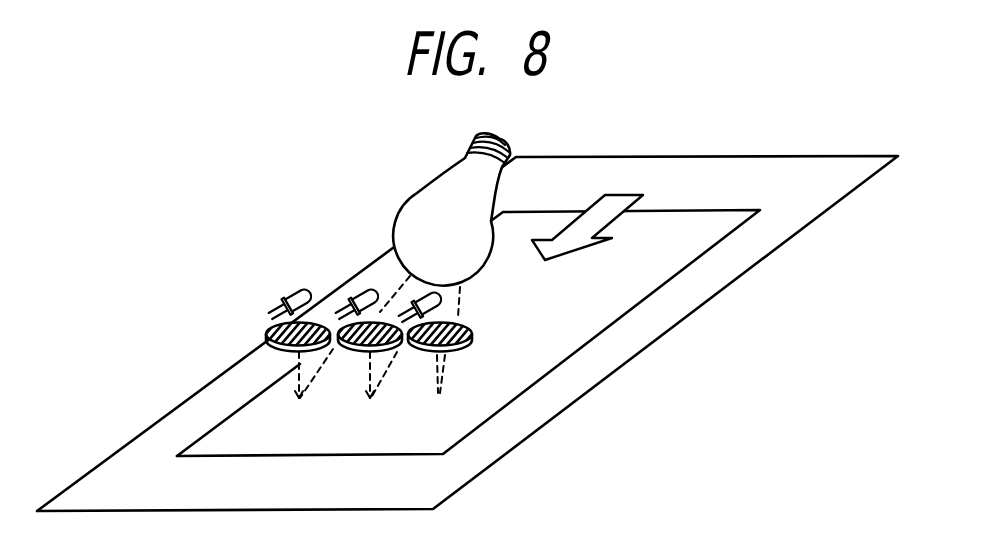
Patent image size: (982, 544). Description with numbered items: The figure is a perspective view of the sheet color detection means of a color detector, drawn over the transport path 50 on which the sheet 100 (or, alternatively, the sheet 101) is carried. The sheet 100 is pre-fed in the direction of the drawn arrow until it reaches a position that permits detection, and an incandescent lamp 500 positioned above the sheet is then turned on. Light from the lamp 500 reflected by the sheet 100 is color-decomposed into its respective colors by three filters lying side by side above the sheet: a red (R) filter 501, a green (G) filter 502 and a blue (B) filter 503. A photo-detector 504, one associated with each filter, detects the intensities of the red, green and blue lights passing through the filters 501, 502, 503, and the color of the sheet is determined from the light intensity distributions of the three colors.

The transport path 50 is at (790, 215).
The sheet 100 is at (468, 358).
The sheet 101 is at (280, 446).
The incandescent lamp 500 is at (413, 193).
The red (R) filter 501 is at (267, 338).
The green (G) filter 502 is at (356, 356).
The blue (B) filter 503 is at (461, 357).
The photo-detector 504 is at (298, 291).